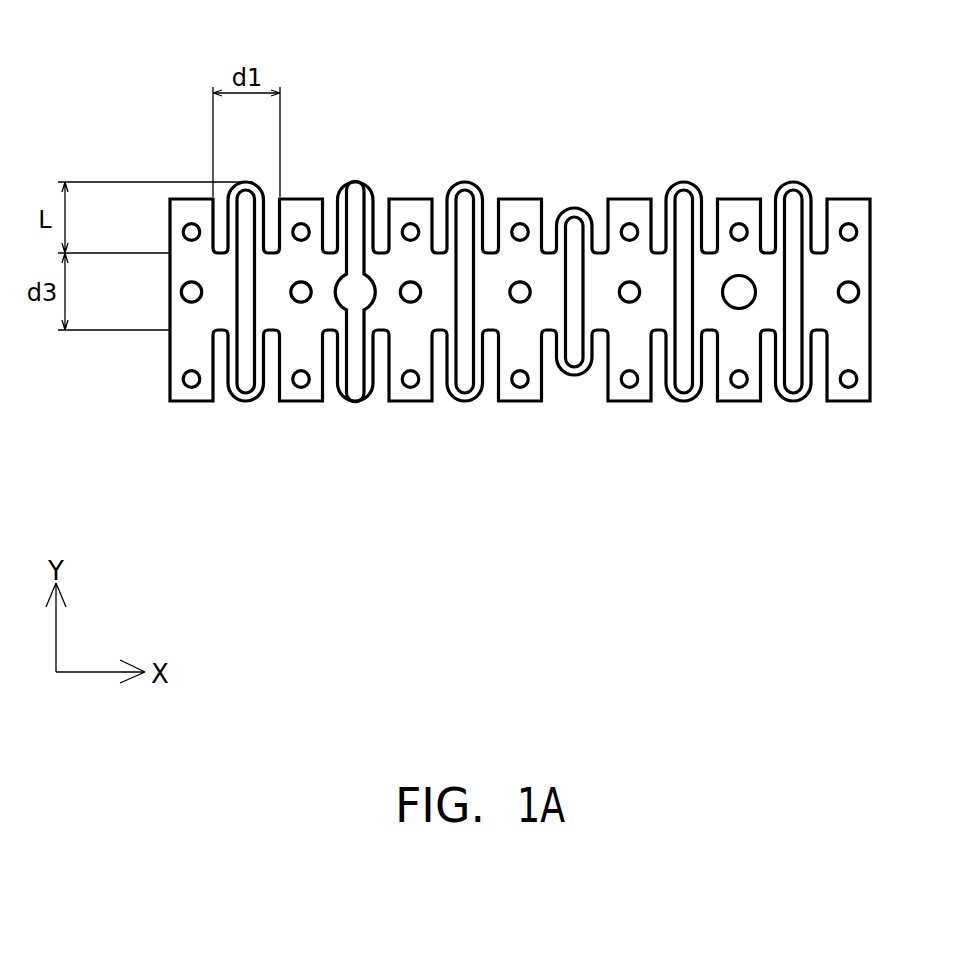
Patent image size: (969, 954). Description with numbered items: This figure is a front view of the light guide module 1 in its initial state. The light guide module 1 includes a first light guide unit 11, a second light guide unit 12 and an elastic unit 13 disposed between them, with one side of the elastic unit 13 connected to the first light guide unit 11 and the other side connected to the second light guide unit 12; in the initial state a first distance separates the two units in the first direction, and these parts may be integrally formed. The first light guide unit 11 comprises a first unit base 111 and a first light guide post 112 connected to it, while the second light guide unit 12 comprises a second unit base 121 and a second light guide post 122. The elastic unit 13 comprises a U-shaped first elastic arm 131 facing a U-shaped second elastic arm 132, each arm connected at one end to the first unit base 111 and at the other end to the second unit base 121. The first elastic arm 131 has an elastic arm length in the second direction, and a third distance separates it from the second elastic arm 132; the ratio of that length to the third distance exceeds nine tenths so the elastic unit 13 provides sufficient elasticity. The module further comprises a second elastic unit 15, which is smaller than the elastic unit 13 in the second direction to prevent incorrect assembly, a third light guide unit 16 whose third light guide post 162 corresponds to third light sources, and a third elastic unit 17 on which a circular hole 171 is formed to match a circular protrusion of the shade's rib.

The light guide module 1 is at (58, 44).
The first light guide unit 11 is at (198, 412).
The first unit base 111 is at (190, 354).
The first light guide post 112 is at (187, 292).
The second light guide unit 12 is at (298, 412).
The second unit base 121 is at (310, 401).
The second light guide post 122 is at (303, 290).
The elastic unit 13 is at (266, 412).
The first elastic arm 131 is at (247, 186).
The second elastic arm 132 is at (241, 400).
The second elastic unit 15 is at (580, 197).
The third light guide unit 16 is at (746, 412).
The third light guide post 162 is at (740, 290).
The third elastic unit 17 is at (362, 170).
The circular hole 171 is at (357, 292).